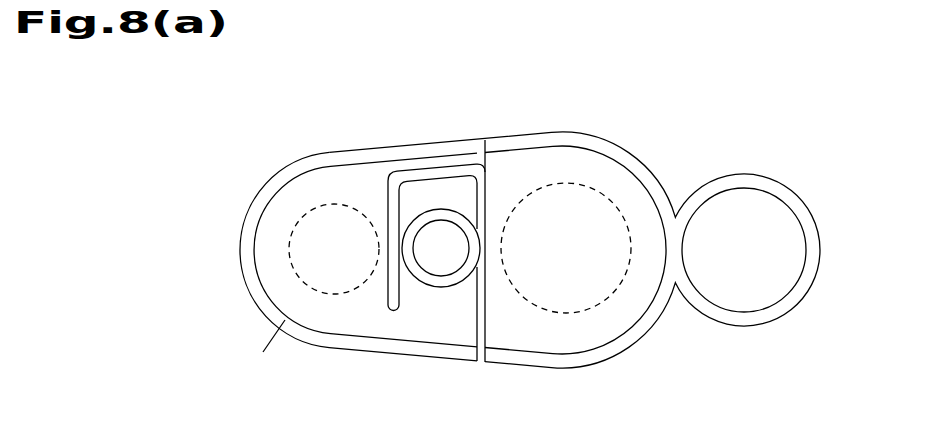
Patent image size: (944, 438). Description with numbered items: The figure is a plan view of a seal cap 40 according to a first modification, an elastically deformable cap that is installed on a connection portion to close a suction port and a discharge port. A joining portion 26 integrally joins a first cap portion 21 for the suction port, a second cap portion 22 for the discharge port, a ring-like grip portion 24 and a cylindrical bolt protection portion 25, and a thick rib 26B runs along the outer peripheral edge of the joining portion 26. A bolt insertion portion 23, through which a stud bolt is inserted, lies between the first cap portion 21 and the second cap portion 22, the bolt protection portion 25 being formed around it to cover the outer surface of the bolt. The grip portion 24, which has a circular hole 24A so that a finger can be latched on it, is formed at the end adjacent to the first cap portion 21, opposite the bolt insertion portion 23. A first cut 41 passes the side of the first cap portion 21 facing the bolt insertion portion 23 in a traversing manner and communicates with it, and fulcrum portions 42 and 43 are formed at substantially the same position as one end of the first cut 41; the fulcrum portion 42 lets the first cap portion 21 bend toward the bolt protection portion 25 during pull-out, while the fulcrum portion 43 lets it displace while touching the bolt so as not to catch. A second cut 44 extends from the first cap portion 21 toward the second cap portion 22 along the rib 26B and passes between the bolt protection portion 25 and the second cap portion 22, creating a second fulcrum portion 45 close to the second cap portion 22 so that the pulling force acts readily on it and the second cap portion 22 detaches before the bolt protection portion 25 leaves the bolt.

The first cap portion 21 is at (627, 297).
The second cap portion 22 is at (275, 188).
The bolt insertion portion 23 is at (441, 248).
The grip portion 24 is at (747, 326).
The circular hole 24A is at (741, 246).
The bolt protection portion 25 is at (428, 288).
The joining portion 26 is at (528, 170).
The rib 26B is at (262, 355).
The seal cap 40 is at (688, 120).
The first cut 41 is at (484, 307).
The fulcrum portion 42 is at (472, 137).
The fulcrum portion 43 is at (485, 138).
The second cut 44 is at (387, 288).
The second fulcrum portion 45 is at (375, 178).